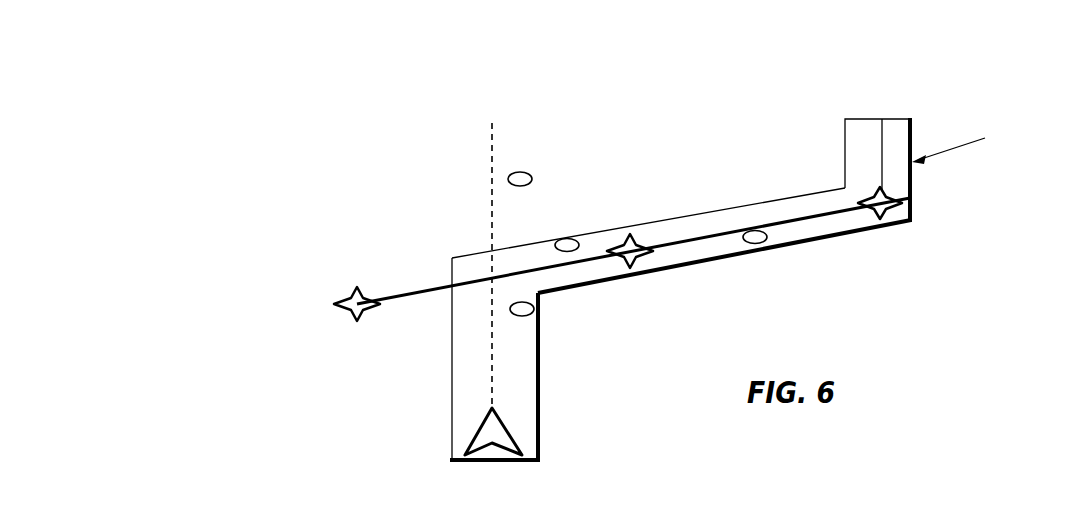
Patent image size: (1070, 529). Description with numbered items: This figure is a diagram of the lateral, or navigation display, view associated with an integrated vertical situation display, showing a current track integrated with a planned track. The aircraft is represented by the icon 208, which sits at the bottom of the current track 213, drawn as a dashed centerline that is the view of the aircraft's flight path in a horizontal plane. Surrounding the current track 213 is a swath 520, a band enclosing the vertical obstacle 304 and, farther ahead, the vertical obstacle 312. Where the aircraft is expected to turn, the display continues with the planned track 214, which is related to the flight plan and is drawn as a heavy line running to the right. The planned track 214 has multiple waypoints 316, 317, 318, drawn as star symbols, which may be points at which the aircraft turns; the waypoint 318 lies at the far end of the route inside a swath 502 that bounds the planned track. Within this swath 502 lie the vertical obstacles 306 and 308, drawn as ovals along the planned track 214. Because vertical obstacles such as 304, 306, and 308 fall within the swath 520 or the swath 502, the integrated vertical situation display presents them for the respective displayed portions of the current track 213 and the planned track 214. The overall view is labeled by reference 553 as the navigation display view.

The icon 208 is at (507, 432).
The current track 213 is at (491, 182).
The planned track 214 is at (782, 222).
The vertical obstacle 304 is at (531, 314).
The vertical obstacle 306 is at (569, 238).
The vertical obstacle 308 is at (766, 242).
The vertical obstacle 312 is at (519, 172).
The waypoint 316 is at (354, 296).
The waypoint 317 is at (630, 236).
The waypoint 318 is at (908, 197).
The swath 502 is at (913, 130).
The swath 520 is at (450, 393).
The navigation display view 553 is at (243, 281).